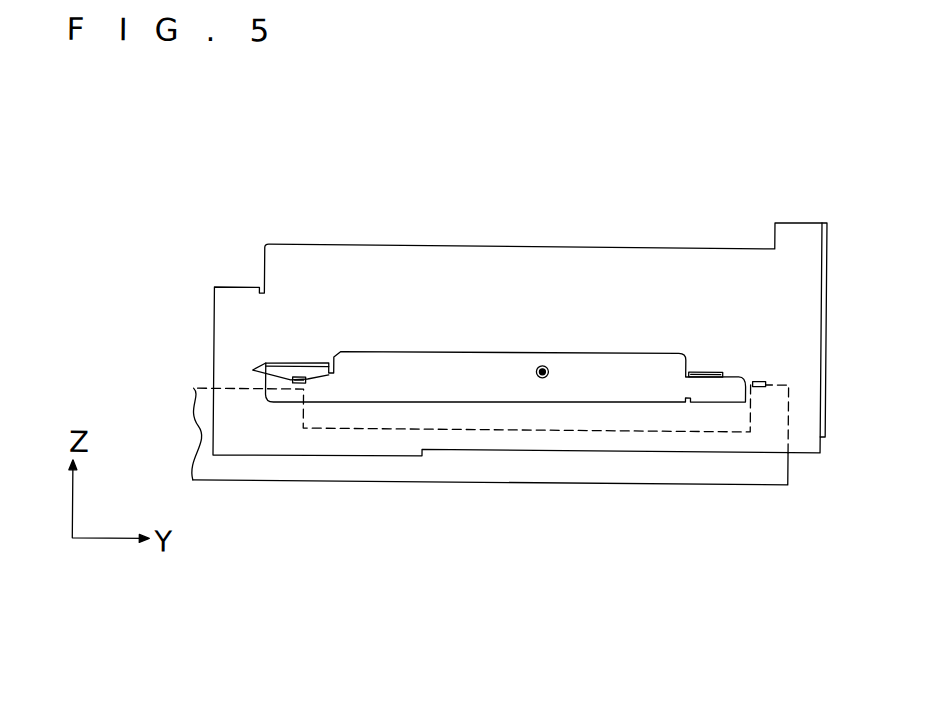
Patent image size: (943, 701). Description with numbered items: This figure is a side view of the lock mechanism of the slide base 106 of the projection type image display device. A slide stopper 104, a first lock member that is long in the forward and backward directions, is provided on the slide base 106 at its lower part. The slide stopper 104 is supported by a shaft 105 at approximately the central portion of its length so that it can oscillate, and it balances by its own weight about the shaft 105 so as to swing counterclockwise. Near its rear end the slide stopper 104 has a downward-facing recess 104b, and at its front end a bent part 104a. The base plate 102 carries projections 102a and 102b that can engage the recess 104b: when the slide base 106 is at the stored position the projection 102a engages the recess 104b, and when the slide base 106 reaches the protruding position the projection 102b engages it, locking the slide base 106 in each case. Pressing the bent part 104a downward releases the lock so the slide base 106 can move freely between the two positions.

The base plate 102 is at (225, 480).
The projection 102a is at (300, 382).
The projection 102b is at (757, 382).
The slide stopper 104 is at (380, 358).
The bent part 104a is at (705, 366).
The recess 104b is at (293, 376).
The shaft 105 is at (542, 362).
The slide base 106 is at (627, 266).